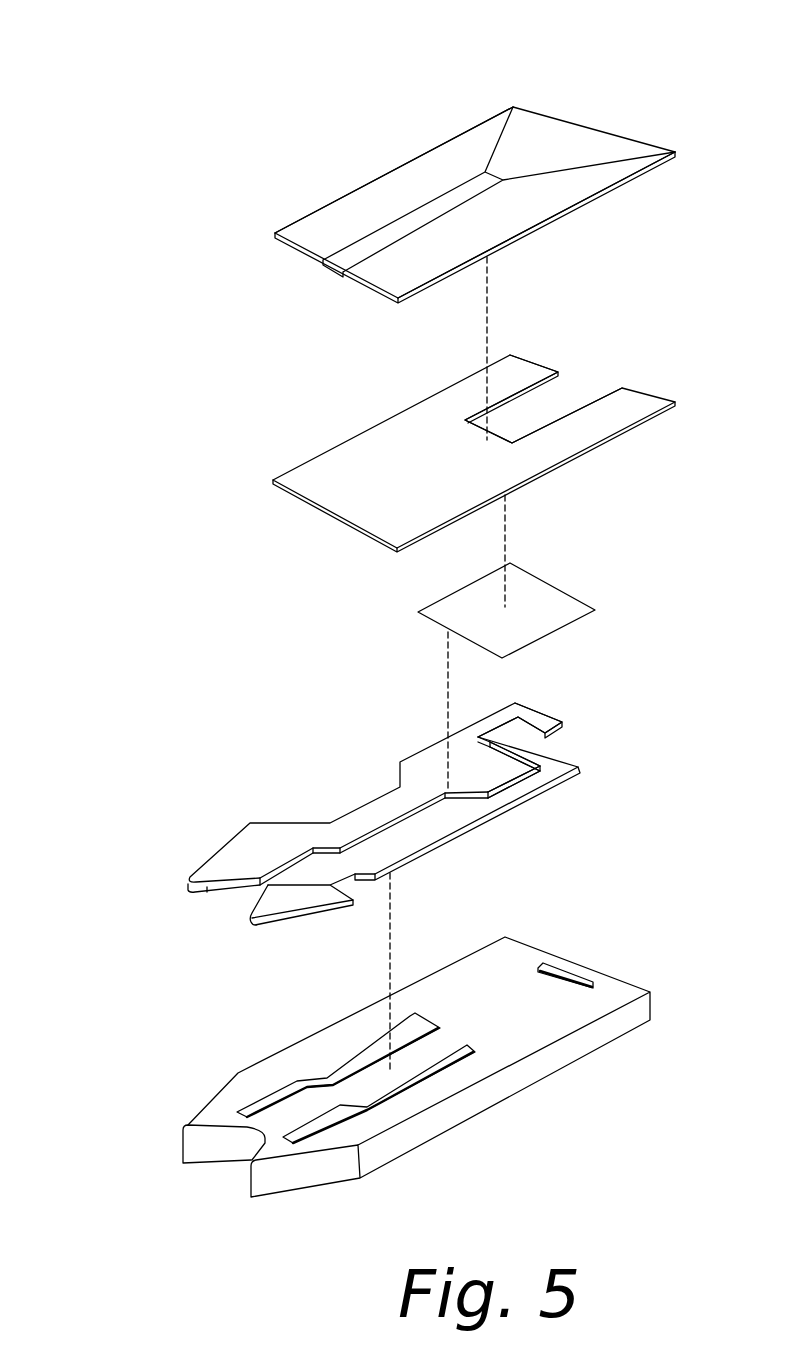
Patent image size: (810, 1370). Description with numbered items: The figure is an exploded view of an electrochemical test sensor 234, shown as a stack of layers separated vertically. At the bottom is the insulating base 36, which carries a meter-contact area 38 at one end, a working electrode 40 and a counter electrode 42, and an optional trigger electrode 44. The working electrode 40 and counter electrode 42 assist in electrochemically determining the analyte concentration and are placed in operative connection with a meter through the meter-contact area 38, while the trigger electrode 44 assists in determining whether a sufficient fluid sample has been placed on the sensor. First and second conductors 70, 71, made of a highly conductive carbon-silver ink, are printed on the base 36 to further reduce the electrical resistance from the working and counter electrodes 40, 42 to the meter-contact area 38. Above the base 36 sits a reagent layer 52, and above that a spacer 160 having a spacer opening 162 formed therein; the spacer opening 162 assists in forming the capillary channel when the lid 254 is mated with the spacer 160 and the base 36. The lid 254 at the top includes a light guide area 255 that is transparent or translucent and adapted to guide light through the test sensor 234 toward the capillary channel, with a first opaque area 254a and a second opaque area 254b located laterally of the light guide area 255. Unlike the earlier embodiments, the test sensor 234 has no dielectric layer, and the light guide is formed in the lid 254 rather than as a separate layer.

The electrochemical test sensor 234 is at (118, 77).
The lid 254 is at (331, 161).
The first opaque area 254a is at (305, 222).
The second opaque area 254b is at (618, 176).
The light guide area 255 is at (340, 258).
The spacer 160 is at (301, 428).
The spacer opening 162 is at (587, 382).
The reagent layer 52 is at (565, 572).
The meter-contact area 38 is at (226, 906).
The working electrode 40 is at (530, 752).
The counter electrode 42 is at (493, 767).
The insulating base 36 is at (573, 1097).
The trigger electrode 44 is at (563, 973).
The second conductor 71 is at (277, 1100).
The first conductor 70 is at (373, 1103).